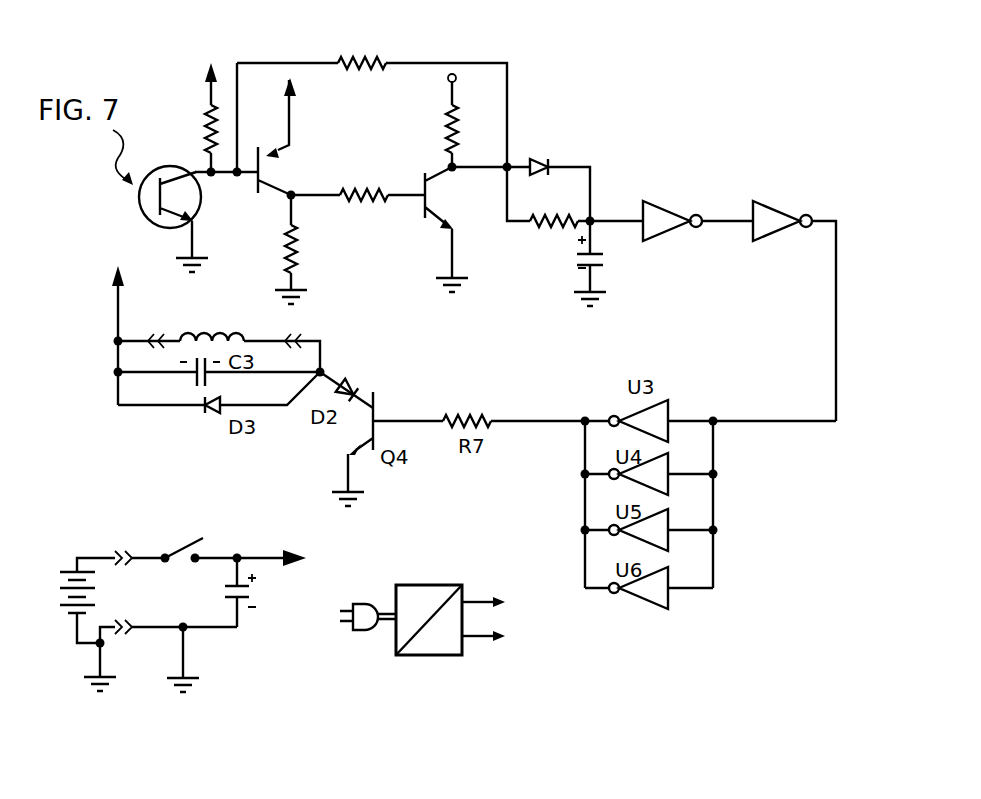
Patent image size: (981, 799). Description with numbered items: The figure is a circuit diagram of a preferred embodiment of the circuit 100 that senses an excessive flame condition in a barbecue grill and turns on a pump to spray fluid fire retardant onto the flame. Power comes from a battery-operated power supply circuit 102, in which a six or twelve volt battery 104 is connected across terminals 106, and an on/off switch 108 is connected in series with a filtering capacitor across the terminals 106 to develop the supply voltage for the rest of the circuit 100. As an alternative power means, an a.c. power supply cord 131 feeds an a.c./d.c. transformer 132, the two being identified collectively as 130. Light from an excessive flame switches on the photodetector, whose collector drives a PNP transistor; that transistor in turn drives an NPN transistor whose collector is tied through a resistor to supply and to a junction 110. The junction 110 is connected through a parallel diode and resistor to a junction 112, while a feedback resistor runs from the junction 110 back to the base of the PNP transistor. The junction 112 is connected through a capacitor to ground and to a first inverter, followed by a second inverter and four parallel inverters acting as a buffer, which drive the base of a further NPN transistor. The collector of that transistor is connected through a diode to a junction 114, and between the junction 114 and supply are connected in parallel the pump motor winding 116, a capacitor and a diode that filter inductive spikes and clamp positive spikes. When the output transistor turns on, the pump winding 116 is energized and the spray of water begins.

The circuit 100 is at (244, 42).
The power supply circuit 102 is at (251, 636).
The battery 104 is at (57, 556).
The terminals 106 is at (128, 589).
The on/off switch 108 is at (178, 535).
The junction 110 is at (506, 170).
The junction 112 is at (597, 217).
The junction 114 is at (323, 370).
The pump motor winding 116 is at (210, 333).
The a.c. power supply means 130 is at (517, 643).
The a.c. power supply cord 131 is at (392, 597).
The a.c./d.c. transformer 132 is at (428, 660).